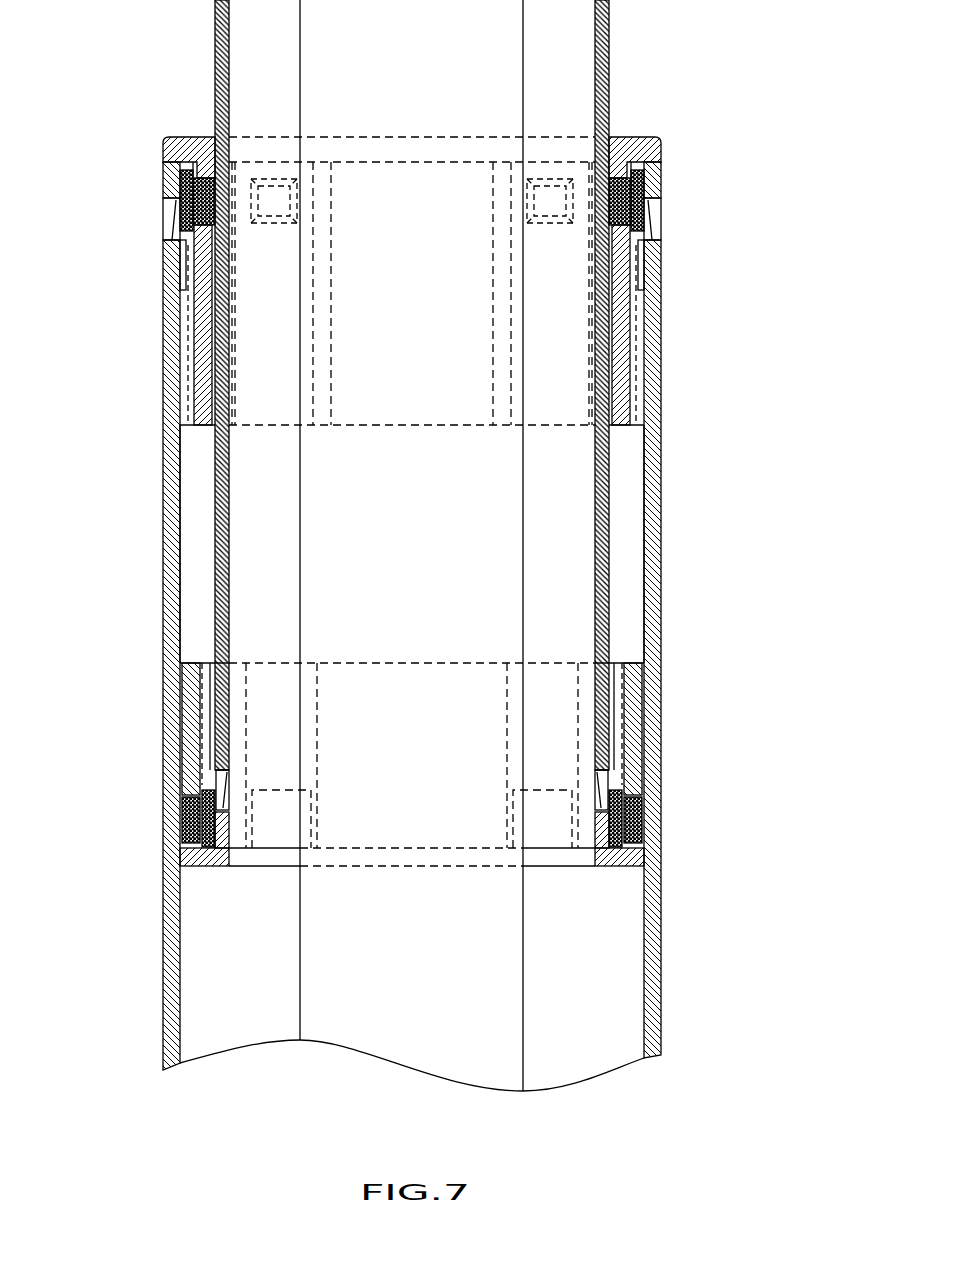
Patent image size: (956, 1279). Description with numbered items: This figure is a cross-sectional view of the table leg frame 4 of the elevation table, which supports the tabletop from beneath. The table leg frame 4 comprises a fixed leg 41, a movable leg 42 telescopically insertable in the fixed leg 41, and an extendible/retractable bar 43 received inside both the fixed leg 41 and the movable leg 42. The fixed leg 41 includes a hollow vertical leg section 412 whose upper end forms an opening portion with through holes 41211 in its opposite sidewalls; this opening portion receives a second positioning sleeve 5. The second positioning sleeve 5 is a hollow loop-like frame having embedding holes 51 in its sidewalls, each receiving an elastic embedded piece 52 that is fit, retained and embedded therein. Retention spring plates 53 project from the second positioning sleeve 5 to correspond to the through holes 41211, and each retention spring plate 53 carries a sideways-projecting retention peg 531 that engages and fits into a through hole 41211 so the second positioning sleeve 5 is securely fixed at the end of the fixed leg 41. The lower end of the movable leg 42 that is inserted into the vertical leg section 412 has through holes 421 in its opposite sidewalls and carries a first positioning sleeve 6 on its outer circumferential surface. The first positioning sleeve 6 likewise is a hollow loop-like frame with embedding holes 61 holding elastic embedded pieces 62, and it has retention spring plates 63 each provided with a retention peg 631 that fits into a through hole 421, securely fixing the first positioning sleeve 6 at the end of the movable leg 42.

The table leg frame 4 is at (128, 408).
The fixed leg 41 is at (665, 540).
The vertical leg section 412 is at (652, 585).
The through holes 41211 is at (165, 240).
The movable leg 42 is at (600, 485).
The through holes 421 is at (600, 770).
The extendible/retractable bar 43 is at (305, 530).
The second positioning sleeve 5 is at (165, 140).
The embedding holes 51 is at (660, 150).
The embedded pieces 52 is at (178, 185).
The retention spring plates 53 is at (165, 290).
The retention peg 531 is at (170, 215).
The first positioning sleeve 6 is at (178, 715).
The embedding holes 61 is at (620, 870).
The embedded pieces 62 is at (180, 820).
The retention spring plates 63 is at (652, 745).
The retention peg 631 is at (205, 800).